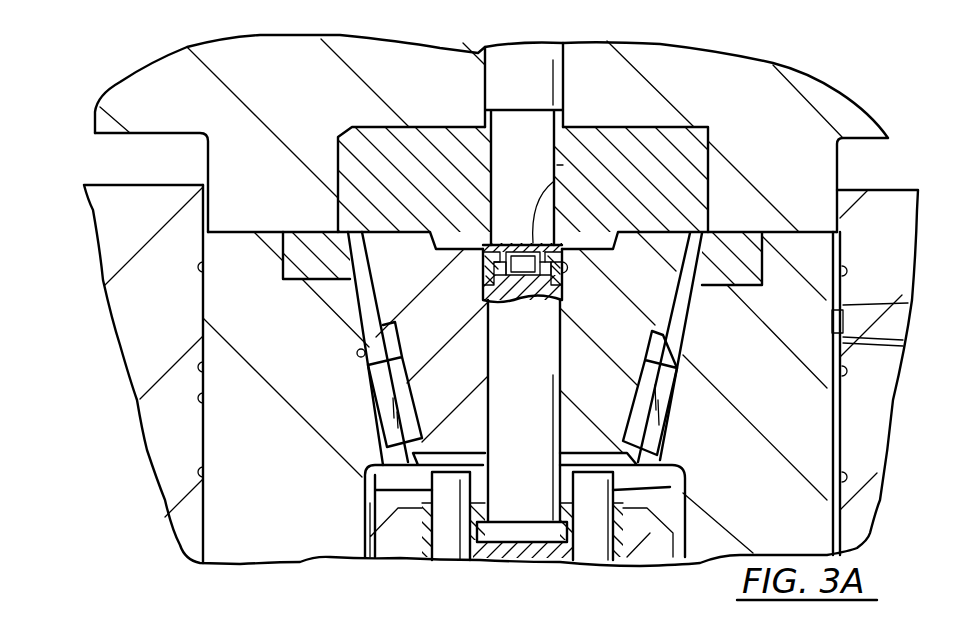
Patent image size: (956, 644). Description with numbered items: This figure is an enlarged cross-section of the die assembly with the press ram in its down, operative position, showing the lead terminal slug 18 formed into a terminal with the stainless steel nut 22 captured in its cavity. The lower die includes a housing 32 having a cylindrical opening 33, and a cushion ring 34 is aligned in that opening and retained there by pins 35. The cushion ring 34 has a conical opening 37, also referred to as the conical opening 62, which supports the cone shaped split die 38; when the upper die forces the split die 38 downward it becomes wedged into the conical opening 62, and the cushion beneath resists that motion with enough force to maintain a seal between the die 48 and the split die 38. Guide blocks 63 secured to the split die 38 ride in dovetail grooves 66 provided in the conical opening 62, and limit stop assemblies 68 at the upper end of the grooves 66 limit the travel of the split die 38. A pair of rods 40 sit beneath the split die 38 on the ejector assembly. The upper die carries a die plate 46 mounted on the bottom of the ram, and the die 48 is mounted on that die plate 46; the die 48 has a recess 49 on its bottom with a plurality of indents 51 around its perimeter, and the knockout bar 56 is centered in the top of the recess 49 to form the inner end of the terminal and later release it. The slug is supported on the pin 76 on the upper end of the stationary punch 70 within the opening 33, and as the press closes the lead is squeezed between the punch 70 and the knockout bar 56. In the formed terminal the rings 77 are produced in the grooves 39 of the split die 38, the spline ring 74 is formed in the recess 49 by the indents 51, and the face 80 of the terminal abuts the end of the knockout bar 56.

The terminal slug 18 is at (487, 271).
The stainless steel nut 22 is at (568, 188).
The housing 32 is at (870, 507).
The cylindrical opening 33 is at (200, 394).
The cushion ring 34 is at (792, 230).
The pins 35 is at (867, 310).
The conical opening 37 is at (562, 287).
The split die 38 is at (452, 338).
The grooves 39 is at (565, 259).
The rods 40 is at (686, 480).
The die plate 46 is at (175, 127).
The die 48 is at (710, 140).
The recess 49 is at (472, 233).
The indents 51 is at (525, 177).
The knockout bar 56 is at (560, 140).
The conical opening 62 is at (373, 297).
The guide blocks 63 is at (660, 406).
The dovetail grooves 66 is at (357, 353).
The limit stop assemblies 68 is at (740, 228).
The punch 70 is at (545, 403).
The spline ring 74 is at (557, 252).
The pin 76 is at (490, 298).
The rings 77 is at (600, 250).
The face 80 is at (562, 170).